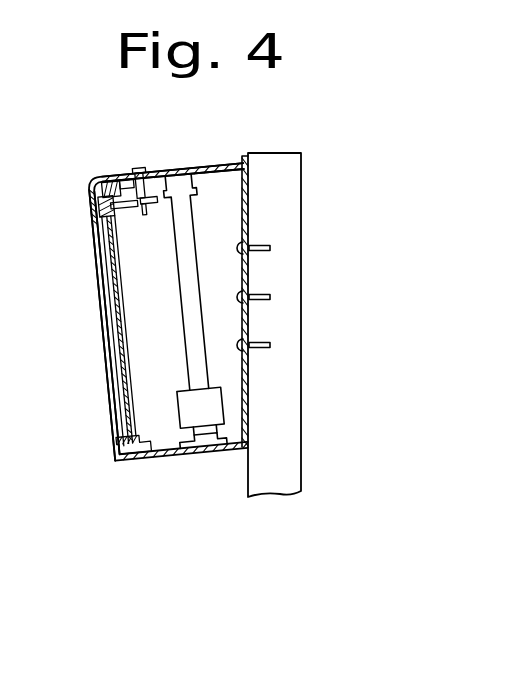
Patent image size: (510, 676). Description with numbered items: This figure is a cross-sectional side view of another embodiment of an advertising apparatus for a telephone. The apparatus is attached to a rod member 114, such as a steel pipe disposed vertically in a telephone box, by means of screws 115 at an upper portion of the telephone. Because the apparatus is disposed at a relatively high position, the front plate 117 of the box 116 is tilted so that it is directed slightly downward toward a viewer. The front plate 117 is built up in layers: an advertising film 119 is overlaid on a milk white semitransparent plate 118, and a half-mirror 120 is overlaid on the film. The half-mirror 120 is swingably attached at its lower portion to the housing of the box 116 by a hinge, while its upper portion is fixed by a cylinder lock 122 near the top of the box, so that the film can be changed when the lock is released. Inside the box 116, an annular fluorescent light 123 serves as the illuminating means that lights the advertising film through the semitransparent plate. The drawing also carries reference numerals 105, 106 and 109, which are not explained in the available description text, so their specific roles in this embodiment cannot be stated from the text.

The lower support block 105 is at (146, 460).
The housing 106 is at (82, 226).
The terminal block 109 is at (121, 176).
The rod member 114 is at (277, 443).
The screws 115 is at (261, 296).
The box 116 is at (223, 184).
The front plate 117 is at (86, 286).
The milk white semitransparent plate 118 is at (122, 268).
The advertising film 119 is at (120, 326).
The half-mirror 120 is at (125, 338).
The cylinder lock 122 is at (148, 167).
The annular fluorescent light 123 is at (195, 363).